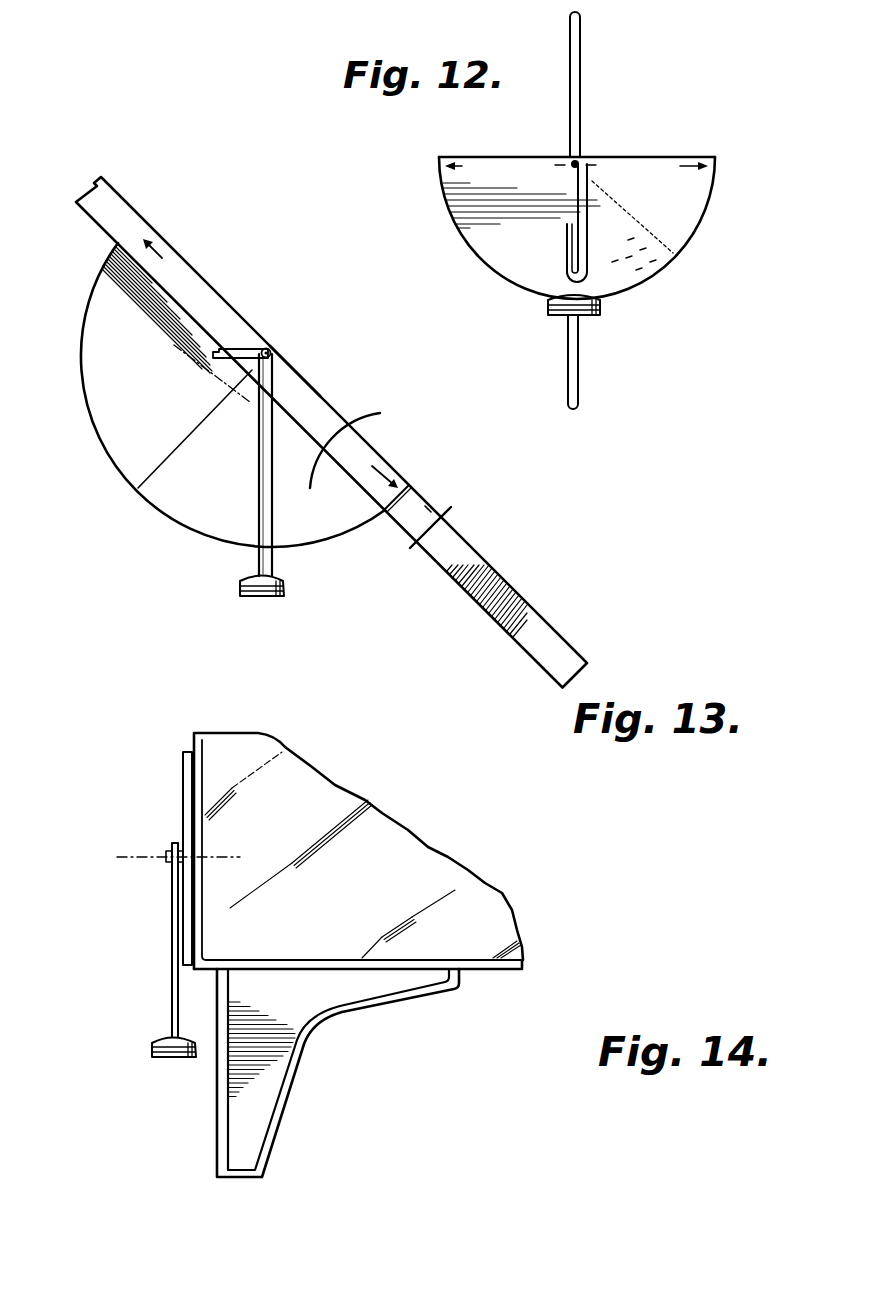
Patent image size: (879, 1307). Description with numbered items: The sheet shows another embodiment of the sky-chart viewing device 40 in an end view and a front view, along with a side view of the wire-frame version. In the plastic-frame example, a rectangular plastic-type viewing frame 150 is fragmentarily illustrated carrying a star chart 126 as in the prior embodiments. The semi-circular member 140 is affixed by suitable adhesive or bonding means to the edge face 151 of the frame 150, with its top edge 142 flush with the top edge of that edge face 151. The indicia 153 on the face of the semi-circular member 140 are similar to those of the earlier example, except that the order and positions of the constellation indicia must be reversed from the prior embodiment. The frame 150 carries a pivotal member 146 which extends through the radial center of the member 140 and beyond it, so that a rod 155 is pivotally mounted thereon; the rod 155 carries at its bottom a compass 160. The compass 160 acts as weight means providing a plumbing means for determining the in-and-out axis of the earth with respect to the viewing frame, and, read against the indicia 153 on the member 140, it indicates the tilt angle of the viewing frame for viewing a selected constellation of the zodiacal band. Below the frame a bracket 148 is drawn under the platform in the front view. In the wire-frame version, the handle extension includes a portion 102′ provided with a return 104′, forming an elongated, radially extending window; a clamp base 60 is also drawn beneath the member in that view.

In FIG. 13, the device 40 is at (716, 181).
In FIG. 13, the clamp base 60 is at (601, 309).
In FIG. 13, the portion 102′ is at (575, 186).
In FIG. 13, the return 104′ is at (565, 257).
In FIG. 14, the star chart 126 is at (417, 890).
In FIG. 12, the semi-circular member 140 is at (118, 478).
In FIG. 14, the semi-circular member 140 is at (182, 756).
In FIG. 12, the top edge 142 is at (291, 373).
In FIG. 12, the pivotal member 146 is at (213, 354).
In FIG. 14, the pivotal member 146 is at (168, 855).
In FIG. 12, the bracket 148 is at (553, 631).
In FIG. 14, the bracket 148 is at (287, 1089).
In FIG. 12, the viewing frame 150 is at (136, 194).
In FIG. 14, the viewing frame 150 is at (490, 990).
In FIG. 12, the edge face 151 is at (413, 503).
In FIG. 12, the indicia 153 is at (368, 436).
In FIG. 12, the rod 155 is at (259, 432).
In FIG. 14, the rod 155 is at (172, 942).
In FIG. 12, the compass 160 is at (278, 597).
In FIG. 14, the compass 160 is at (165, 1059).